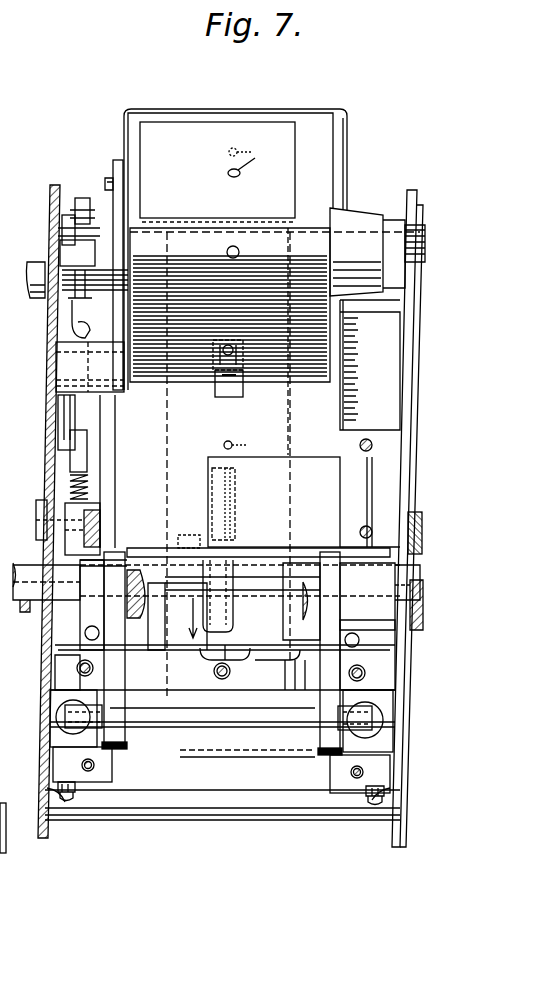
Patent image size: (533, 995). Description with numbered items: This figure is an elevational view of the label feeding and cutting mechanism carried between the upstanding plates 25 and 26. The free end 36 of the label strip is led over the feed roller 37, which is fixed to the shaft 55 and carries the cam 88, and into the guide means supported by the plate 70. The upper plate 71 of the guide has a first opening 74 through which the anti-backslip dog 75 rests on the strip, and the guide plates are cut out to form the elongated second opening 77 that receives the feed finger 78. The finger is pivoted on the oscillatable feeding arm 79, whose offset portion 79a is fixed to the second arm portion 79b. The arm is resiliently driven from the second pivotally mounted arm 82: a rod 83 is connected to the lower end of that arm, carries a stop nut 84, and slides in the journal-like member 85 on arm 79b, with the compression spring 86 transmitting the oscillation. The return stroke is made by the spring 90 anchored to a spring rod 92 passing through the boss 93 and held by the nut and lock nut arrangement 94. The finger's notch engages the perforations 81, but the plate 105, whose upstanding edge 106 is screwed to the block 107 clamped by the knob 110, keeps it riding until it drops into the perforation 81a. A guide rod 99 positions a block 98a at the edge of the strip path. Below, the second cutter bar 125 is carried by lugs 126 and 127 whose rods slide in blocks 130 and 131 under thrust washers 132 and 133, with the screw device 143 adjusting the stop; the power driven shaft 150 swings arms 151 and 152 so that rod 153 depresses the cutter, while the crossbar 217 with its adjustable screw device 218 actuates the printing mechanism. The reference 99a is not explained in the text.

The upstanding plate 25 is at (50, 488).
The upstanding plate 26 is at (408, 342).
The free end of the strip of labels 36 is at (292, 393).
The feed roller 37 is at (318, 152).
The shaft 55 is at (26, 282).
The plate 70 is at (382, 389).
The upper plate 71 is at (335, 195).
The first opening 74 is at (228, 397).
The anti-backslip dog 75 is at (218, 380).
The second opening 77 is at (238, 548).
The feed finger 78 is at (234, 606).
The oscillatable feeding arm 79 is at (183, 617).
The offset portion 79a is at (134, 568).
The second arm portion 79b is at (100, 525).
The perforations 81 is at (217, 289).
The perforation 81a is at (200, 524).
The second pivotally mounted arm 82 is at (96, 403).
The rod 83 is at (60, 422).
The stop nut 84 is at (82, 450).
The journal-like member 85 is at (75, 527).
The compression spring 86 is at (103, 462).
The cam 88 is at (113, 170).
The spring 90 is at (70, 330).
The spring rod 92 is at (82, 198).
The boss 93 is at (94, 265).
The nut and lock nut arrangement 94 is at (66, 232).
The block 98a is at (300, 560).
The guide rod 99 is at (28, 566).
The shaft 99a is at (158, 572).
The plate 105 is at (330, 448).
The vertically upstanding edge 106 is at (367, 480).
The block 107 is at (380, 500).
The knob 110 is at (405, 533).
The second cutter bar 125 is at (238, 784).
The rectangular lug 126 is at (335, 795).
The rectangular lug 127 is at (108, 790).
The block 130 is at (383, 745).
The block 131 is at (53, 712).
The thrust washer 132 is at (370, 708).
The thrust washer 133 is at (62, 702).
The screw device 143 is at (66, 802).
The power driven shaft 150 is at (165, 610).
The arm 151 is at (126, 748).
The arm 152 is at (318, 752).
The rod 153 is at (190, 720).
The crossbar 217 is at (296, 648).
The adjustable screw device 218 is at (230, 671).